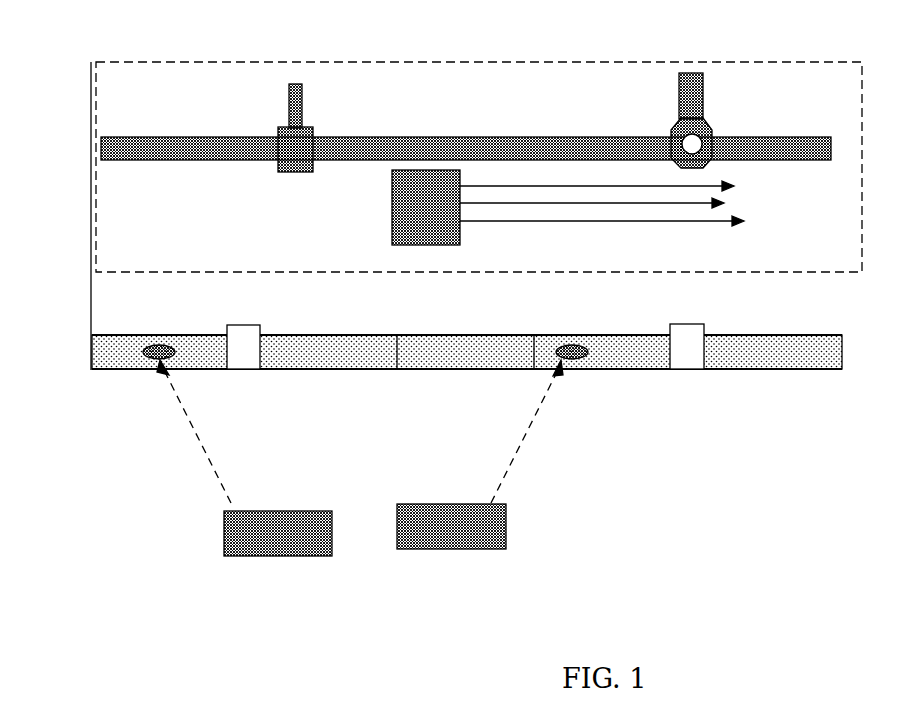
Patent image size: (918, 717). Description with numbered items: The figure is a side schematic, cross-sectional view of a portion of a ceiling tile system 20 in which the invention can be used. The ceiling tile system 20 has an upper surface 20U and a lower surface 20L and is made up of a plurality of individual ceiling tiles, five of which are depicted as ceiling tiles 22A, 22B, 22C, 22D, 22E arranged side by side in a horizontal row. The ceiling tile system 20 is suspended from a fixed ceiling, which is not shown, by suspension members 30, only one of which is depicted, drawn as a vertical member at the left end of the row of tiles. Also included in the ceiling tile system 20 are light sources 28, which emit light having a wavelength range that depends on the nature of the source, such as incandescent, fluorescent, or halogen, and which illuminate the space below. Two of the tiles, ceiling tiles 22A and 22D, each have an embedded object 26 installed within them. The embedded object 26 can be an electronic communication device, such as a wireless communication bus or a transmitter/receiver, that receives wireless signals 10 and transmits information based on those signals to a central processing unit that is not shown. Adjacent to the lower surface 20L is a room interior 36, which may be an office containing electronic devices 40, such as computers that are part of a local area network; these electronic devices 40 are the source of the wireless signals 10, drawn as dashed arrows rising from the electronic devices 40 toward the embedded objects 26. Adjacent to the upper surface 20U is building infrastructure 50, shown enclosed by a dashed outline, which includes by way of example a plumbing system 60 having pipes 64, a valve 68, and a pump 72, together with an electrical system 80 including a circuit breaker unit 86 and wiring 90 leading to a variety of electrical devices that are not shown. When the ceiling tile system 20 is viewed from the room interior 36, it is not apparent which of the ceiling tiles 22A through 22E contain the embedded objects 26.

The wireless signals 10 is at (228, 492).
The ceiling tile system 20 is at (440, 350).
The upper surface 20U is at (343, 334).
The lower surface 20L is at (350, 370).
The ceiling tile 22A is at (203, 352).
The ceiling tile 22B is at (360, 352).
The ceiling tile 22C is at (497, 352).
The ceiling tile 22D is at (646, 352).
The ceiling tile 22E is at (800, 352).
The embedded object 26 is at (150, 362).
The light sources 28 is at (250, 370).
The suspension members 30 is at (91, 232).
The room interior 36 is at (686, 473).
The electronic devices 40 is at (396, 506).
The building infrastructure 50 is at (233, 62).
The plumbing system 60 is at (466, 140).
The pipes 64 is at (165, 160).
The valve 68 is at (297, 173).
The pump 72 is at (715, 132).
The electrical system 80 is at (385, 213).
The circuit breaker unit 86 is at (392, 178).
The wiring 90 is at (590, 221).